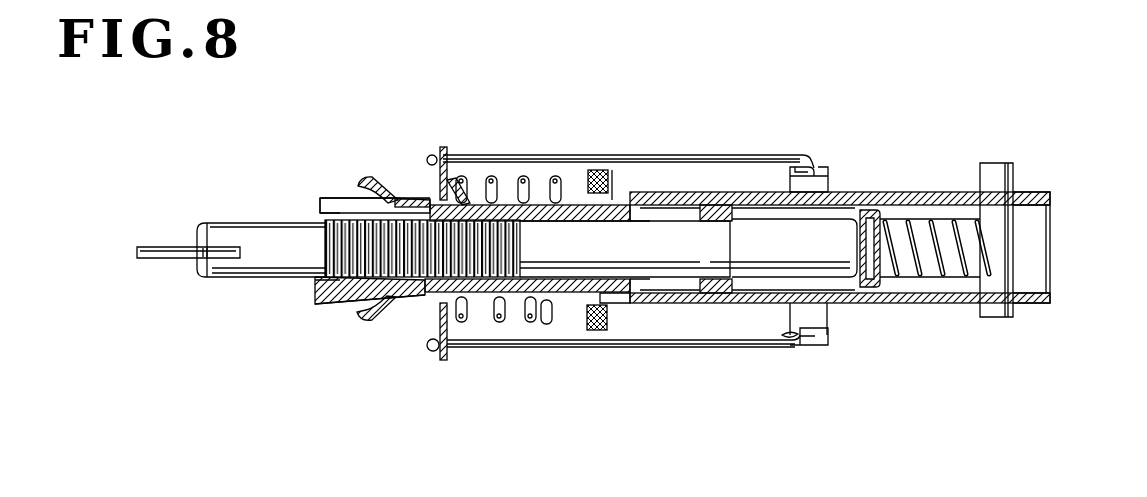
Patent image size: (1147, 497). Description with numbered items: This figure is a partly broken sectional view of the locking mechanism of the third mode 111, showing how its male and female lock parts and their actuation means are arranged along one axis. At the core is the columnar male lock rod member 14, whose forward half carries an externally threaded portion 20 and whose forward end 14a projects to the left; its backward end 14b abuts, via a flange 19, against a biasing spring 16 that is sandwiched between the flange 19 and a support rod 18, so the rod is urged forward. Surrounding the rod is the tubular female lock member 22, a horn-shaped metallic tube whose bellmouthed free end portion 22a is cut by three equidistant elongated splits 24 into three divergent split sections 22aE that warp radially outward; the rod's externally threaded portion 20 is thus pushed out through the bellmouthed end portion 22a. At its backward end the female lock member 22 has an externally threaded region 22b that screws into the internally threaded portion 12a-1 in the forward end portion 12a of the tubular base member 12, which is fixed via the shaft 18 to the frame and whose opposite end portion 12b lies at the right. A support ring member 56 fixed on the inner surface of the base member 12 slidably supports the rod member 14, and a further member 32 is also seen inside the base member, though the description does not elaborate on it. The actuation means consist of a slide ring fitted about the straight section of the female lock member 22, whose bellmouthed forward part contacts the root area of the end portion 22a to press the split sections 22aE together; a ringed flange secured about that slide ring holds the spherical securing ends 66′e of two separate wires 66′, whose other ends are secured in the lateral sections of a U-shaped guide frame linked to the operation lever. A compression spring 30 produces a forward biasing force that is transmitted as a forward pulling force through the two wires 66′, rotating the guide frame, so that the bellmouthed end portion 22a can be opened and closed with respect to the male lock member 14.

The forward end 14a is at (148, 246).
The male lock rod member 14 is at (228, 290).
The externally threaded portion 20 is at (322, 264).
The elongated splits 24 is at (320, 205).
The inner sleeve 12a is at (578, 197).
The tubular base member 12 is at (856, 187).
The support ring member 56 is at (740, 203).
The seal 32 is at (605, 195).
The wires 66′ is at (635, 248).
The spherical securing ends 66′e is at (461, 234).
The compression spring 30 is at (546, 328).
The externally threaded region 22b is at (613, 304).
The internally threaded portion 12a-1 is at (641, 298).
The backward end 14b is at (868, 225).
The flange 19 is at (900, 212).
The support rod 18 is at (997, 319).
The end cap 12b is at (1045, 182).
The biasing spring 16 is at (920, 292).
The bellmouthed free end portion 22a is at (300, 184).
The female lock member 22 is at (320, 177).
The divergent split sections 22aE is at (330, 205).
The third mode of longitudinal locking mechanism 111 is at (1062, 112).